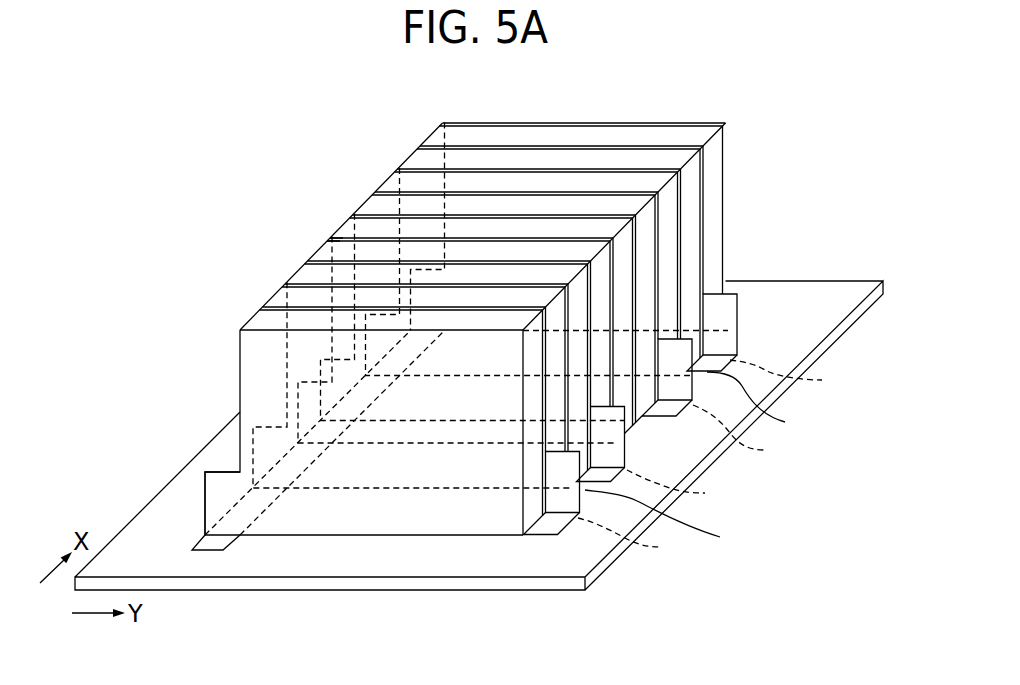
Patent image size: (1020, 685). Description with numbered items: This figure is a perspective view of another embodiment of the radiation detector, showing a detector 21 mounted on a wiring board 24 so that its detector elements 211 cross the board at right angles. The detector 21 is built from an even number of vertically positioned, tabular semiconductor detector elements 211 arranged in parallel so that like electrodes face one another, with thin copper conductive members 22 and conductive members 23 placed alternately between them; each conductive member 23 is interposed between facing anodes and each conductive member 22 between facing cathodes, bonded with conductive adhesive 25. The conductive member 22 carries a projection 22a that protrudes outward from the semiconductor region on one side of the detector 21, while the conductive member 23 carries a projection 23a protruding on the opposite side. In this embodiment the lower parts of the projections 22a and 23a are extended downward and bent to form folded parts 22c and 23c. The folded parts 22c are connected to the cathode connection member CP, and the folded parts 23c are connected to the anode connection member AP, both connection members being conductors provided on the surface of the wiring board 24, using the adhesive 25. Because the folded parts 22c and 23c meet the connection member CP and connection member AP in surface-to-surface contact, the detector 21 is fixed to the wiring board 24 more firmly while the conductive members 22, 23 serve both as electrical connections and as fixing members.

The detector 21 is at (718, 111).
The detector element 211 is at (325, 253).
The conductive member 22 is at (260, 352).
The projection 22a is at (225, 482).
The folded part 22c is at (206, 533).
The conductive member 23 is at (282, 307).
The projection 23a is at (683, 353).
The folded part 23c is at (555, 527).
The wiring board 24 is at (799, 279).
The conductive adhesive 25 is at (716, 459).
The anode connection member AP is at (699, 461).
The cathode connection member CP is at (255, 518).